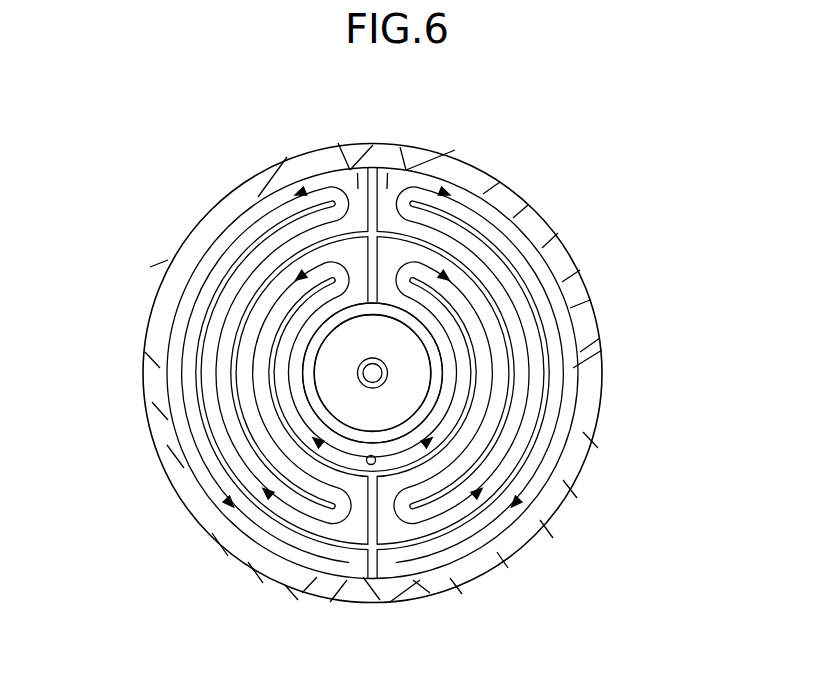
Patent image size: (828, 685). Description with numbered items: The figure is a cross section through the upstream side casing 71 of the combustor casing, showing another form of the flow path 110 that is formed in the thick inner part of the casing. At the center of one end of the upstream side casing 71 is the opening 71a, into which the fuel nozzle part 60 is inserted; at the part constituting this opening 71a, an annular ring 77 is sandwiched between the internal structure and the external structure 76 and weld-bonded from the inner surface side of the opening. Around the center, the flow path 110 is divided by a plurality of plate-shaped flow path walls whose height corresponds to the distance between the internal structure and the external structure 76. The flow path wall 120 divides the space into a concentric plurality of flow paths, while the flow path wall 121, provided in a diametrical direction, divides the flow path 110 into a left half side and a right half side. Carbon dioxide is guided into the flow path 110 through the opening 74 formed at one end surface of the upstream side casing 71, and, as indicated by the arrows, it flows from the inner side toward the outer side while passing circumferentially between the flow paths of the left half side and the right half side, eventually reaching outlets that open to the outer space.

The upstream side casing 71 is at (628, 131).
The opening 71a is at (372, 316).
The external structure 76 is at (532, 222).
The flow path 110 is at (357, 187).
The flow path wall 121 is at (375, 169).
The flow path wall 120 is at (229, 272).
The fuel nozzle part 60 is at (300, 363).
The opening 74 is at (352, 428).
The annular ring 77 is at (427, 379).